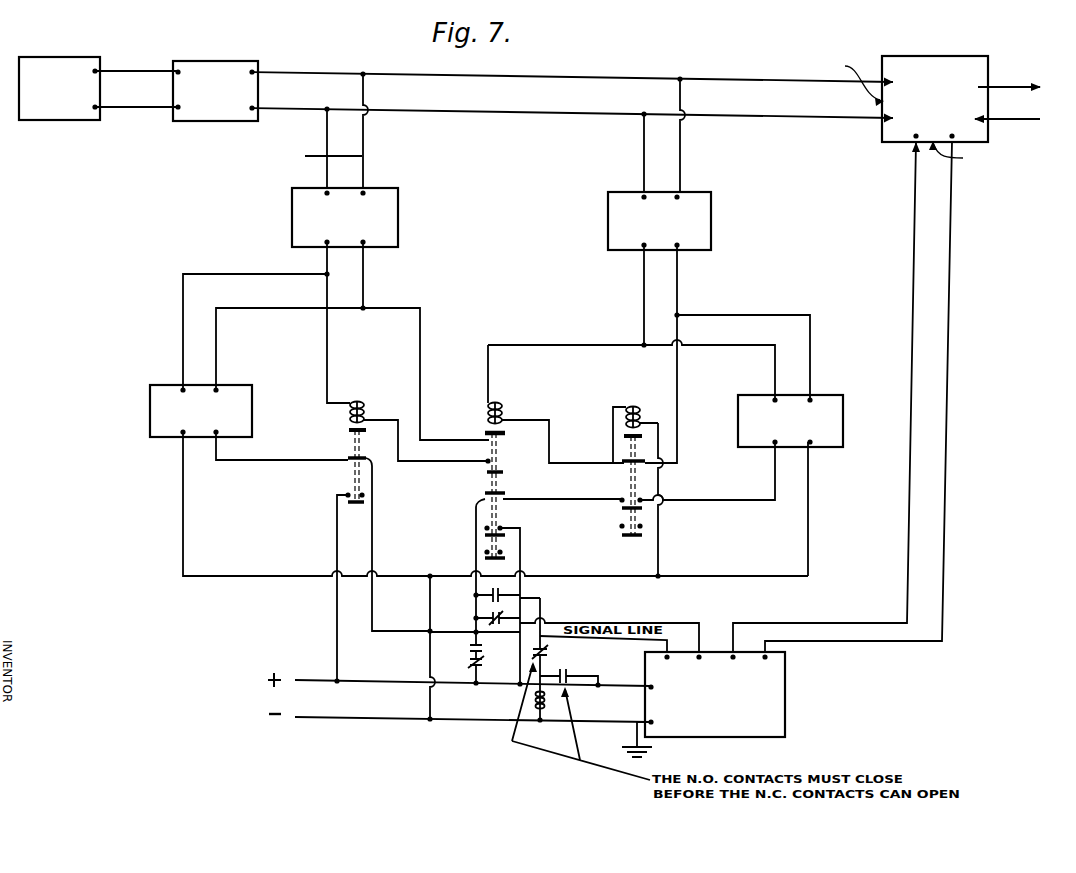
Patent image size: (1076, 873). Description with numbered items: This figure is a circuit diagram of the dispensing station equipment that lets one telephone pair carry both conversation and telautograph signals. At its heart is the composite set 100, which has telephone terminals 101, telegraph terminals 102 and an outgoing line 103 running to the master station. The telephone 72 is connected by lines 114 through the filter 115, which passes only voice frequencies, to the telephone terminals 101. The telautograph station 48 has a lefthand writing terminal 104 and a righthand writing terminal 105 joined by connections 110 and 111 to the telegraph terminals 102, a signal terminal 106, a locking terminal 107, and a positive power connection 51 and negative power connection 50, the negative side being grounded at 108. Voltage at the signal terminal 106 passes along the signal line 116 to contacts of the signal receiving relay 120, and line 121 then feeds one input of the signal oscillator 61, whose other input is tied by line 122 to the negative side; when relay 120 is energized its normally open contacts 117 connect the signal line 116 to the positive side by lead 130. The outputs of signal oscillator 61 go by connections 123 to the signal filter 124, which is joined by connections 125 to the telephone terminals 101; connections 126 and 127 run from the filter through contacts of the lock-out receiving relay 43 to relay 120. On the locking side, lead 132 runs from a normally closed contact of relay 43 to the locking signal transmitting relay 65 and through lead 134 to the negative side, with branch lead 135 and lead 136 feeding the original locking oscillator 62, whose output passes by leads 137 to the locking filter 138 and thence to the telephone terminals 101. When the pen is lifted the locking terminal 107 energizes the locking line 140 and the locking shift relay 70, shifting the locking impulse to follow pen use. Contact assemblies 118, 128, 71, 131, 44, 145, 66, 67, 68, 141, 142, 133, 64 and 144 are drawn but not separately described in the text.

The telephone 72 is at (62, 44).
The lines 114 is at (124, 106).
The filter 115 is at (216, 62).
The connections 125 is at (320, 156).
The signal filter 124 is at (292, 213).
The locking filter 138 is at (711, 214).
The connections 123 is at (207, 313).
The connection 126 is at (326, 352).
The connection 127 is at (420, 352).
The signal receiving relay 120 is at (364, 406).
The relay contact 118 is at (367, 458).
The normally open contacts 117 is at (366, 495).
The line 121 is at (253, 464).
The line 122 is at (226, 579).
The lead 130 is at (334, 600).
The signal line 116 is at (382, 632).
The positive power connection 51 is at (316, 678).
The negative power connection 50 is at (311, 723).
The signal oscillator 61 is at (150, 398).
The original locking oscillator 62 is at (843, 408).
The lock-out receiving relay 43 is at (506, 408).
The relay contact 128 is at (506, 441).
The relay contact 71 is at (484, 496).
The relay contact 131 is at (486, 528).
The relay contact 44 is at (503, 554).
The condenser 145 is at (502, 591).
The contact 66 is at (485, 620).
The condenser 67 is at (470, 649).
The contact 68 is at (470, 662).
The contact 141 is at (546, 656).
The condenser 142 is at (567, 669).
The locking shift relay 70 is at (541, 710).
The lead 132 is at (587, 499).
The relay contact 133 is at (621, 507).
The relay contact 64 is at (621, 537).
The lead 134 is at (661, 541).
The branch lead 135 is at (809, 520).
The lead 136 is at (699, 500).
The leads 137 is at (713, 343).
The locking signal transmitting relay 65 is at (636, 396).
The relay contact 144 is at (642, 463).
The locking line 140 is at (687, 613).
The locking terminal 107 is at (701, 650).
The signal terminal 106 is at (667, 658).
The righthand writing terminal 105 is at (767, 658).
The lefthand writing terminal 104 is at (735, 663).
The telautograph station 48 is at (775, 722).
The ground 108 is at (653, 751).
The connection 110 is at (904, 616).
The connection 111 is at (880, 643).
The composite set 100 is at (967, 64).
The telephone terminals 101 is at (897, 81).
The telegraph terminals 102 is at (975, 141).
The outgoing line 103 is at (984, 84).